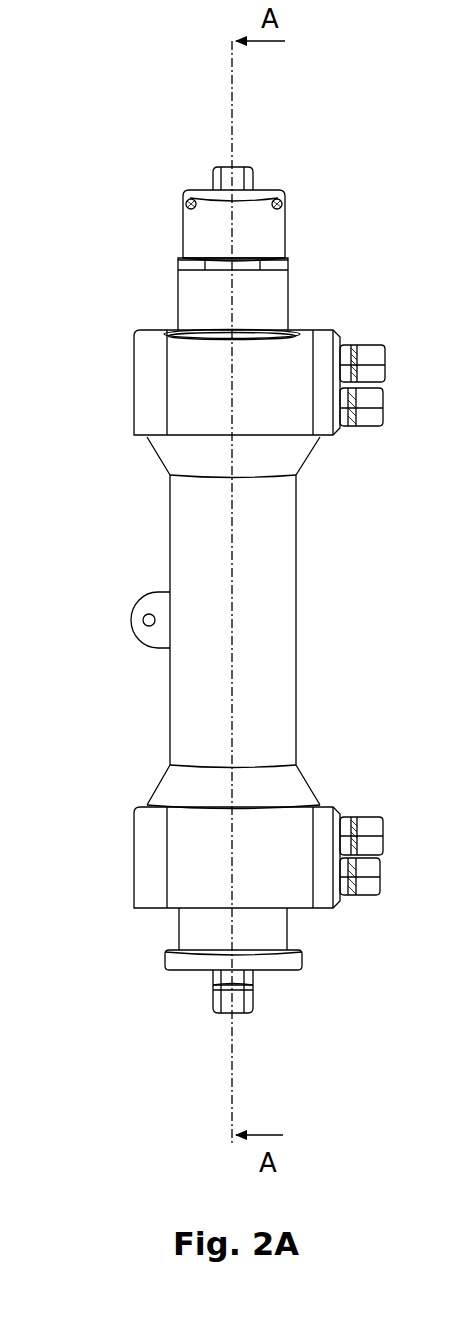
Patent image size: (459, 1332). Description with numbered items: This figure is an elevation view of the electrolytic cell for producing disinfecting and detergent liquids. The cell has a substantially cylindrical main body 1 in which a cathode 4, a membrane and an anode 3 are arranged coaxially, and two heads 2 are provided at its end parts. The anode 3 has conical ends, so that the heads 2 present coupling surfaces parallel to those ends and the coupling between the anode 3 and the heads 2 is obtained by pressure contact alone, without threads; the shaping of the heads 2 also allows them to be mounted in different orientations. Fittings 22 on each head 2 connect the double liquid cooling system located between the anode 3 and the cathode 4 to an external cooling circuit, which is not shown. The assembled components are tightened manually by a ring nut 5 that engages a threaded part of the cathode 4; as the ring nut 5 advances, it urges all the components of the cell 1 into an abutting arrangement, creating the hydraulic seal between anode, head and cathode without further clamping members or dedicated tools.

The main body 1 is at (136, 552).
The heads 2 is at (128, 398).
The anode 3 is at (299, 678).
The cathode 4 is at (181, 235).
The ring nut 5 is at (292, 295).
The fittings 22 is at (362, 863).